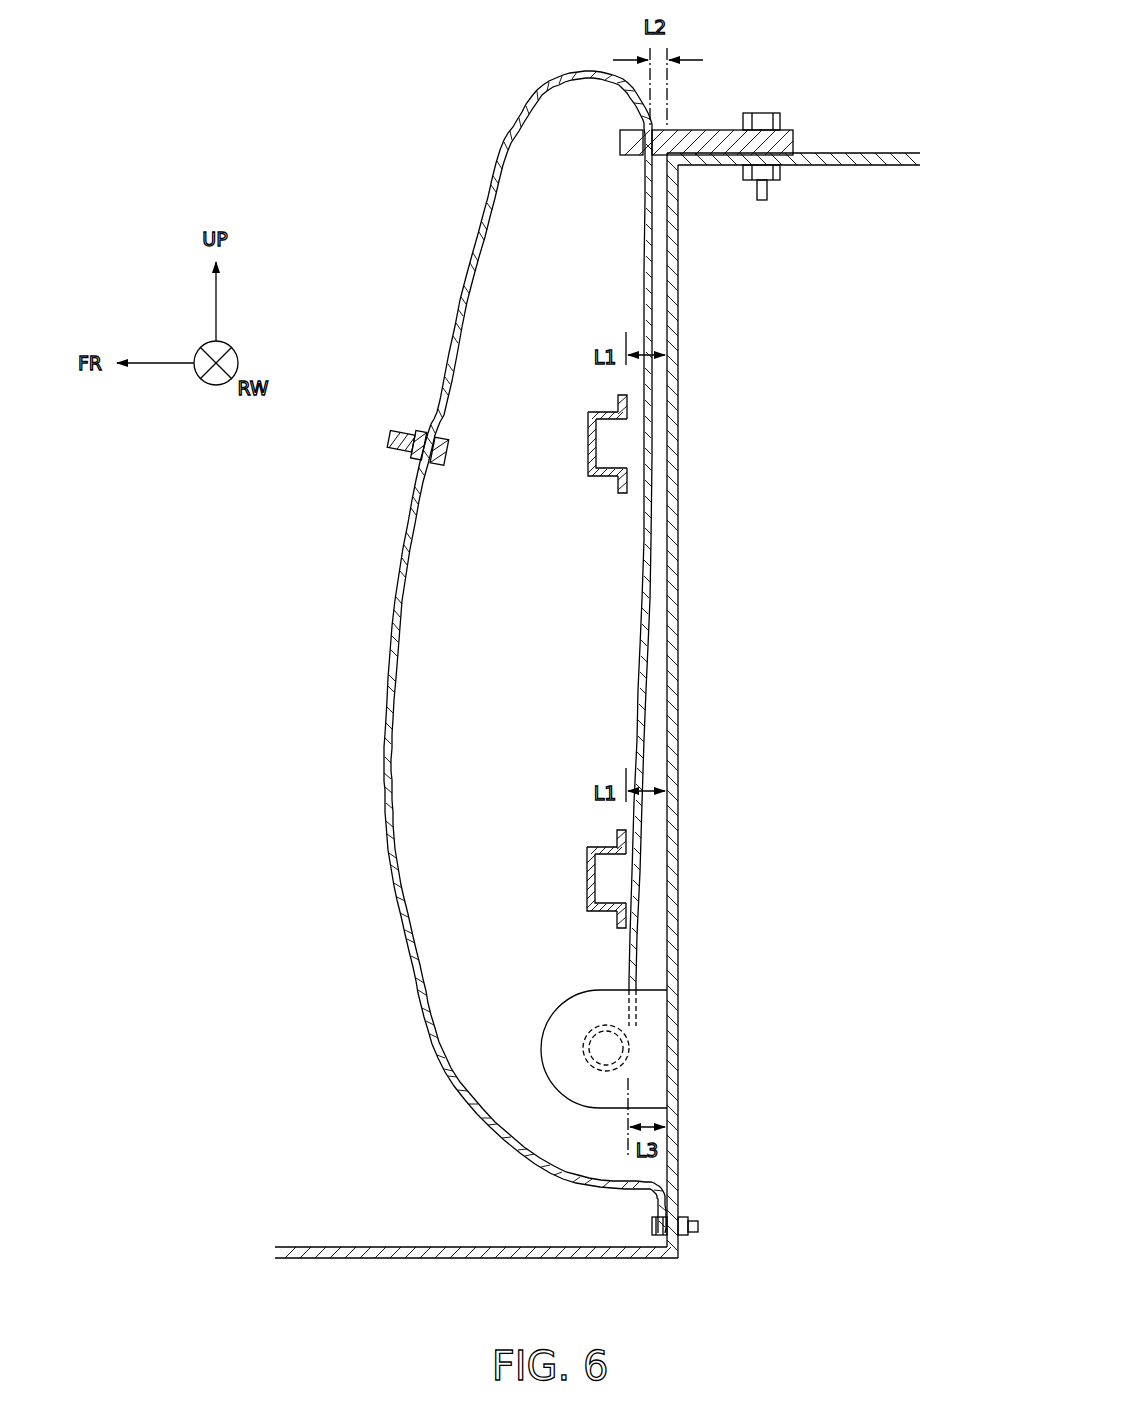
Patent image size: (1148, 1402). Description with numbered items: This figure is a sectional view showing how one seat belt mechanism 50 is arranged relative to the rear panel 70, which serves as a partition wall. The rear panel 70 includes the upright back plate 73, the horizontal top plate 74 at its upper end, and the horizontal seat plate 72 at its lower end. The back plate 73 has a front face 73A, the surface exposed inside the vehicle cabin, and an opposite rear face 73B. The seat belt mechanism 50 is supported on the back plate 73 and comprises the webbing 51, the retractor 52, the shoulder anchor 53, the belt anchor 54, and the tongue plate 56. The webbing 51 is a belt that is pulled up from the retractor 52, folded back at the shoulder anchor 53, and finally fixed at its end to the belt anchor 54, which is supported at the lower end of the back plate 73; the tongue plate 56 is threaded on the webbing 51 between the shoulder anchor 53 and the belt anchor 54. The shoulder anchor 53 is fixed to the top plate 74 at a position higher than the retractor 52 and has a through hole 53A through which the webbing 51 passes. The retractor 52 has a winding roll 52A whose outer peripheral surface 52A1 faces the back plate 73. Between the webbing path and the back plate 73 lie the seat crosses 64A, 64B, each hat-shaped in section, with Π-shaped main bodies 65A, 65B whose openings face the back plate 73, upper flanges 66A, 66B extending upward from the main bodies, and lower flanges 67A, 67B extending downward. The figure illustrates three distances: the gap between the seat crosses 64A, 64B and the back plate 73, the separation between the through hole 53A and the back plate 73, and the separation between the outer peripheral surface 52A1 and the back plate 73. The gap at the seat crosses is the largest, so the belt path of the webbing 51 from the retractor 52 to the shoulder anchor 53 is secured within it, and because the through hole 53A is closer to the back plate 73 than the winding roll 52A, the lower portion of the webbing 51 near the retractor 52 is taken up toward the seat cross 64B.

The seat belt mechanism 50 is at (511, 652).
The webbing 51 is at (510, 135).
The retractor 52 is at (544, 1062).
The winding roll 52A is at (608, 1055).
The outer peripheral surface 52A1 is at (603, 1027).
The shoulder anchor 53 is at (689, 136).
The through hole 53A is at (620, 137).
The belt anchor 54 is at (652, 1228).
The tongue plate 56 is at (403, 433).
The seat cross 64A is at (562, 423).
The main body 65A is at (588, 423).
The upper flange 66A is at (617, 400).
The lower flange 67A is at (623, 495).
The seat cross 64B is at (564, 858).
The main body 65B is at (588, 858).
The upper flange 66B is at (617, 840).
The lower flange 67B is at (623, 933).
The rear panel 70 is at (597, 705).
The seat plate 72 is at (458, 1247).
The back plate 73 is at (674, 705).
The front face 73A is at (632, 290).
The rear face 73B is at (680, 327).
The top plate 74 is at (827, 165).